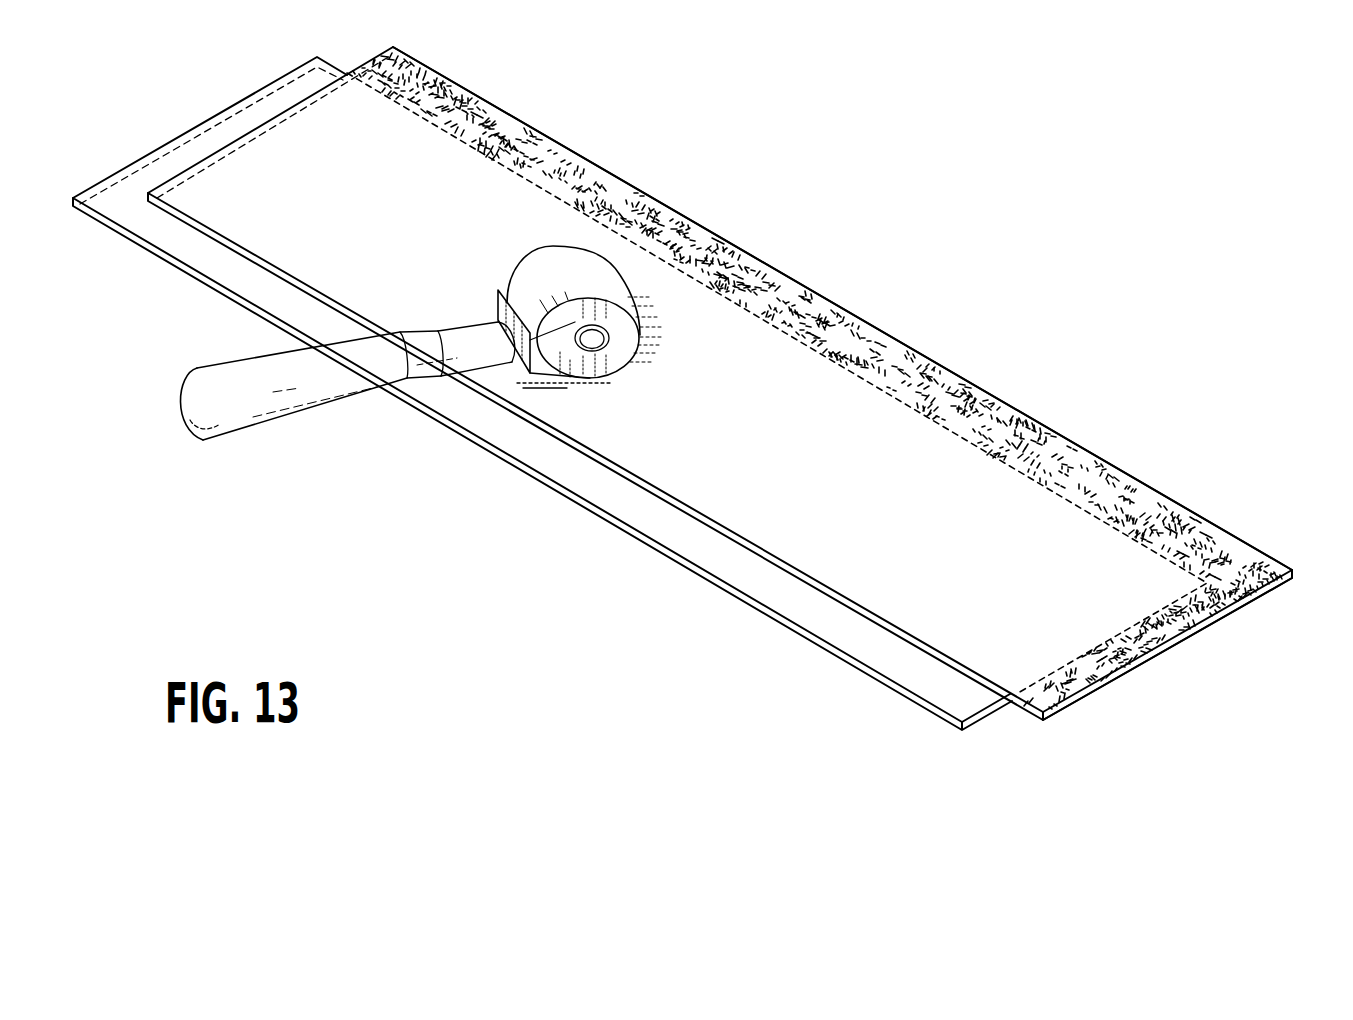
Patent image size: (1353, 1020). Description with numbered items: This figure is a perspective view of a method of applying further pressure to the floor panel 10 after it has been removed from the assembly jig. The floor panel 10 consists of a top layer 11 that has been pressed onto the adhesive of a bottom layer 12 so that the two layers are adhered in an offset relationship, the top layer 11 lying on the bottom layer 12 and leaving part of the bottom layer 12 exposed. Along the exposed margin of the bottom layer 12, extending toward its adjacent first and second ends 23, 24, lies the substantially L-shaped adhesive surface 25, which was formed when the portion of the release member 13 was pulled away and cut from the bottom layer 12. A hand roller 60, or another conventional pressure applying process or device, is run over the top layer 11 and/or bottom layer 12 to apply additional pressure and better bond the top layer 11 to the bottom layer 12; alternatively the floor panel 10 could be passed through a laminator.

The floor panel 10 is at (803, 634).
The top layer 11 is at (680, 538).
The bottom layer 12 is at (1127, 673).
The release member 13 is at (1043, 413).
The first end 23 is at (1190, 638).
The second end 24 is at (1170, 497).
The substantially L-shaped adhesive surface 25 is at (917, 367).
The hand roller 60 is at (560, 263).